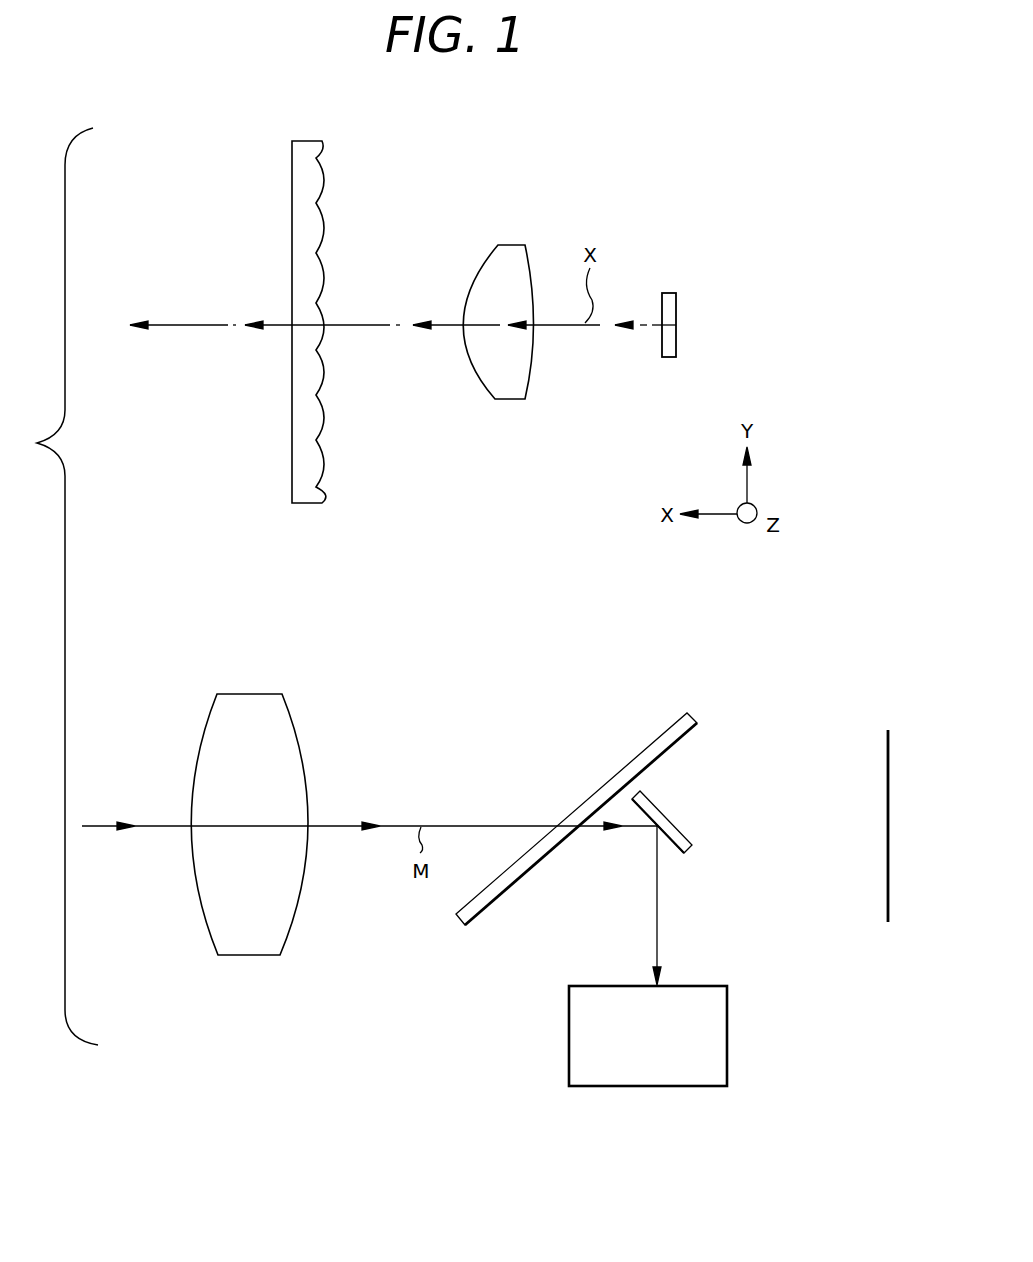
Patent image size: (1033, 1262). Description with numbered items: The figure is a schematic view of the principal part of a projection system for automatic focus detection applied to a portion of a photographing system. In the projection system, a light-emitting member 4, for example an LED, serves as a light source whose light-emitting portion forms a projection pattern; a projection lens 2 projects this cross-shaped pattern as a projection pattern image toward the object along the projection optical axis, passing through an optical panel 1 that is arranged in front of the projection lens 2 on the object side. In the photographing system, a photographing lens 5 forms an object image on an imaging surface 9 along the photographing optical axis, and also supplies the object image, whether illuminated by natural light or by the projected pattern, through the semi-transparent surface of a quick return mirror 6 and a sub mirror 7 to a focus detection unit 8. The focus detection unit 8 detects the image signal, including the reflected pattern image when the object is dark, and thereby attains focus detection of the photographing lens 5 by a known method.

The optical panel 1 is at (312, 505).
The projection lens 2 is at (512, 401).
The light-emitting member 4 is at (668, 292).
The photographing system 5 is at (268, 957).
The quick return mirror 6 is at (495, 900).
The sub mirror 7 is at (690, 850).
The focus detection unit 8 is at (727, 993).
The imaging surface 9 is at (886, 915).